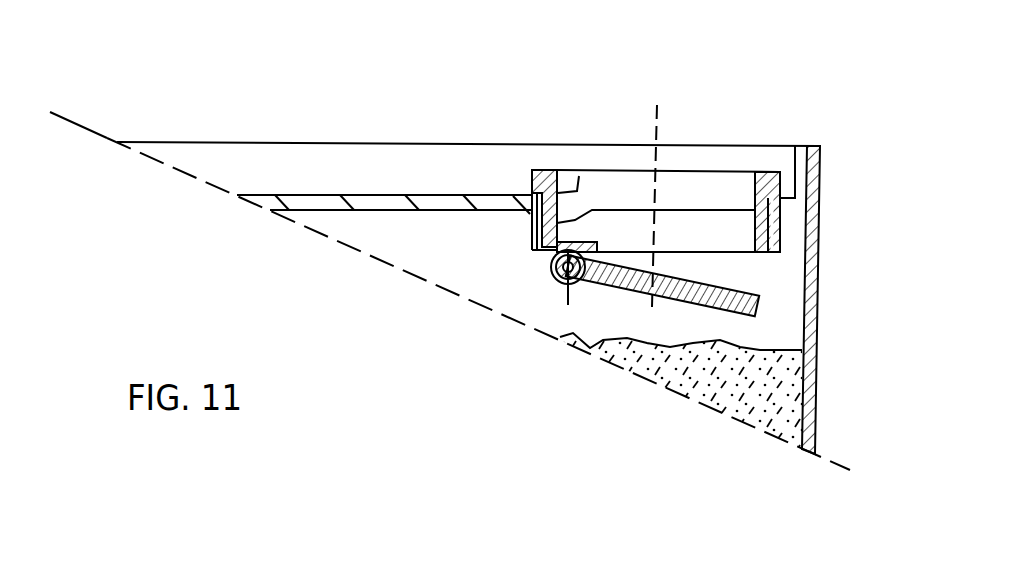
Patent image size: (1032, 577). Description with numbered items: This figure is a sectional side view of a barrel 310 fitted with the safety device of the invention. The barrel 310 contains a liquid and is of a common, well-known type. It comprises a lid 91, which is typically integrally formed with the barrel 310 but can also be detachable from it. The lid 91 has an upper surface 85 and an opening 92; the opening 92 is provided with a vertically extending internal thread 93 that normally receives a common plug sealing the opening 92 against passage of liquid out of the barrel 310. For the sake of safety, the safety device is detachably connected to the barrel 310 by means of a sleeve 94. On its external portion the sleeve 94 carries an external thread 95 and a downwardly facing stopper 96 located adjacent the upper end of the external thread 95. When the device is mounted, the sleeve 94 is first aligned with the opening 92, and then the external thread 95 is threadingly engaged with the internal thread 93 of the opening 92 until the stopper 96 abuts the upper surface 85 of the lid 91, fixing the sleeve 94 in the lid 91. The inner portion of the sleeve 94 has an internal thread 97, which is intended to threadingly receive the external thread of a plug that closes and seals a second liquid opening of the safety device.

The lid 91 is at (327, 134).
The upper surface 85 is at (400, 195).
The internal thread 97 is at (579, 176).
The internal thread 93 is at (592, 210).
The opening 92 is at (675, 199).
The stopper 96 is at (785, 212).
The sleeve 94 is at (820, 212).
The external thread 95 is at (777, 257).
The barrel 310 is at (813, 368).